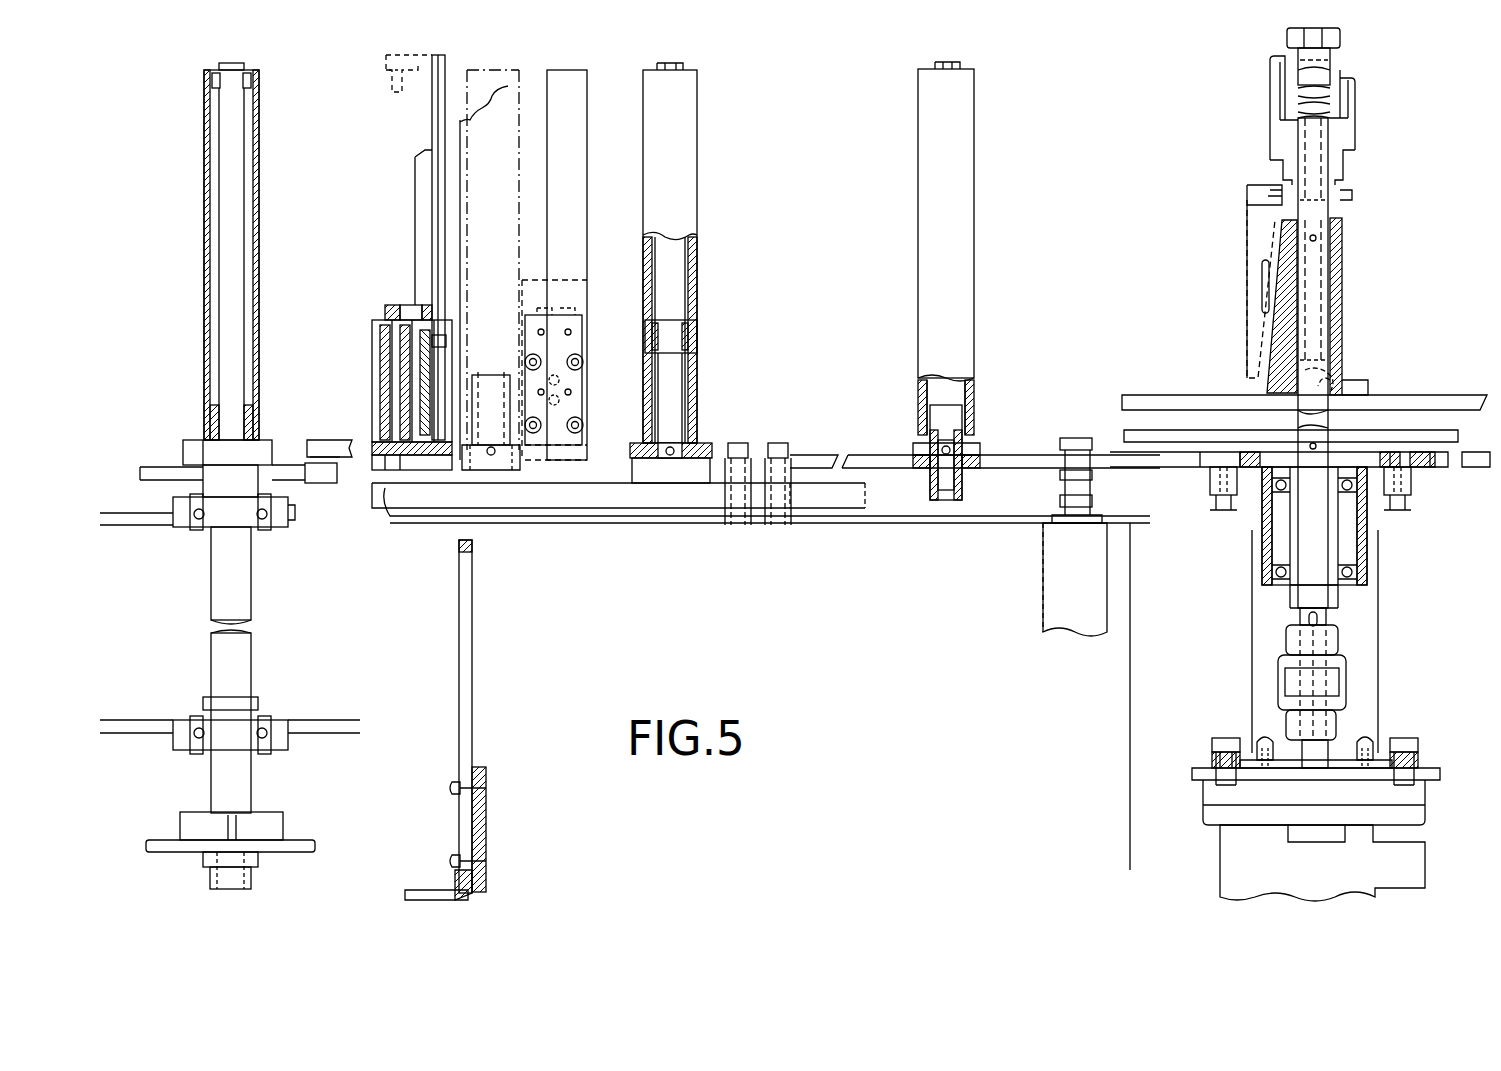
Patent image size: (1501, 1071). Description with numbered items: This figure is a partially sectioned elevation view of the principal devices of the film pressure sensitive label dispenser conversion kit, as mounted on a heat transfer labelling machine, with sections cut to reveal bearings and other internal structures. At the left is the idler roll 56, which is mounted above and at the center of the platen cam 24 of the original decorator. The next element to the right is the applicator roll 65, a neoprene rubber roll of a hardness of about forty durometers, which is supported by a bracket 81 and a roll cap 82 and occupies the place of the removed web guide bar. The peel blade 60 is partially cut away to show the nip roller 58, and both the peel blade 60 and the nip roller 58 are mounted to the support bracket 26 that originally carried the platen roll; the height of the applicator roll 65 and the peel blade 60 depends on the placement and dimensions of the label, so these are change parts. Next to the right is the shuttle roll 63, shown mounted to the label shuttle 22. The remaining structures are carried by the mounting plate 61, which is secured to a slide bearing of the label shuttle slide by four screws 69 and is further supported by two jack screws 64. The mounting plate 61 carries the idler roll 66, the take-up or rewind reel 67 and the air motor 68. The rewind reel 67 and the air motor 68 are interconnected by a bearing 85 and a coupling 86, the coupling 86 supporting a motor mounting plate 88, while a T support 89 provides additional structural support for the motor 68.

The label shuttle 22 is at (642, 500).
The platen cam 24 is at (272, 450).
The support bracket 26 is at (552, 428).
The idler roll 56 is at (259, 298).
The nip roll 58 is at (508, 96).
The peel blade assembly 60 is at (587, 75).
The mounting plate 61 is at (812, 468).
The shuttle roll 63 is at (697, 220).
The jack screws 64 is at (1046, 580).
The applicator roll 65 is at (375, 355).
The idler roll 66 is at (918, 250).
The take-up reel 67 is at (1342, 310).
The air motor 68 is at (1220, 875).
The screws 69 is at (738, 443).
The bracket 81 is at (445, 95).
The roll cap 82 is at (410, 318).
The bearing 85 is at (1350, 545).
The coupling 86 is at (1346, 680).
The motor mounting plate 88 is at (1405, 750).
The "T" support 89 is at (1252, 630).